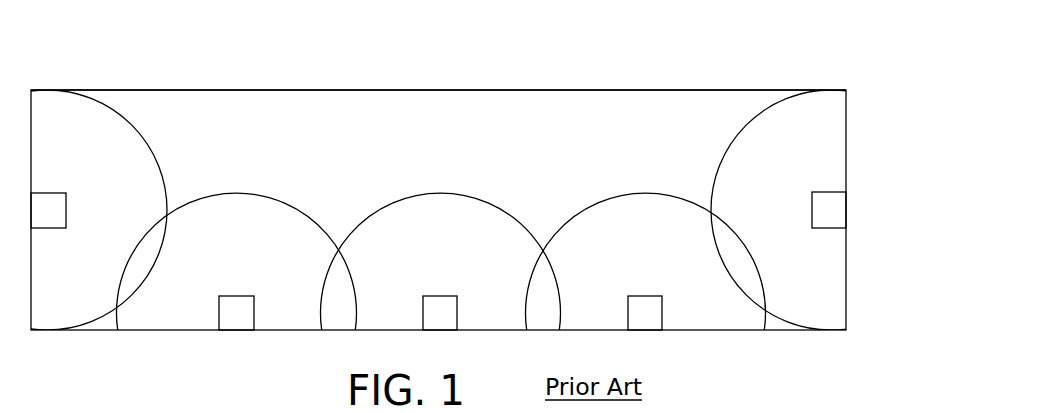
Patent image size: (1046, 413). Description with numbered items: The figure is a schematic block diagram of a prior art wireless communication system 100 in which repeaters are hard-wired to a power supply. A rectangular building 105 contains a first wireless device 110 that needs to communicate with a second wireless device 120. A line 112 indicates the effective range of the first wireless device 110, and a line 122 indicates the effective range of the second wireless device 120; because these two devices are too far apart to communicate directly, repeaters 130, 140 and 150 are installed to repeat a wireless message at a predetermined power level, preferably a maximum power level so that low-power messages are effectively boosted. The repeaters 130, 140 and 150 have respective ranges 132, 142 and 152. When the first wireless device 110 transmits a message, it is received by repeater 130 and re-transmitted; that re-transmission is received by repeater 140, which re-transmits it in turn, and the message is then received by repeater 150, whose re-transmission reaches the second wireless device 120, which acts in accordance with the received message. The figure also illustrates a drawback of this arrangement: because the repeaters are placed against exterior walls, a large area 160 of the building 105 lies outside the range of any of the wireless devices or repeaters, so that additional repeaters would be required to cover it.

The prior art sensor array system 100 is at (799, 57).
The rectangular building 105 is at (544, 90).
The first wireless device 110 is at (50, 192).
The line indicating effective range of device 110 112 is at (161, 170).
The second wireless device 120 is at (826, 191).
The line indicating effective range of device 120 122 is at (722, 155).
The repeater 130 is at (238, 295).
The range of repeater 130 132 is at (298, 212).
The repeater 140 is at (442, 295).
The range of repeater 140 142 is at (460, 196).
The repeater 150 is at (642, 295).
The range of repeater 150 152 is at (605, 200).
The area not within range 160 is at (403, 129).